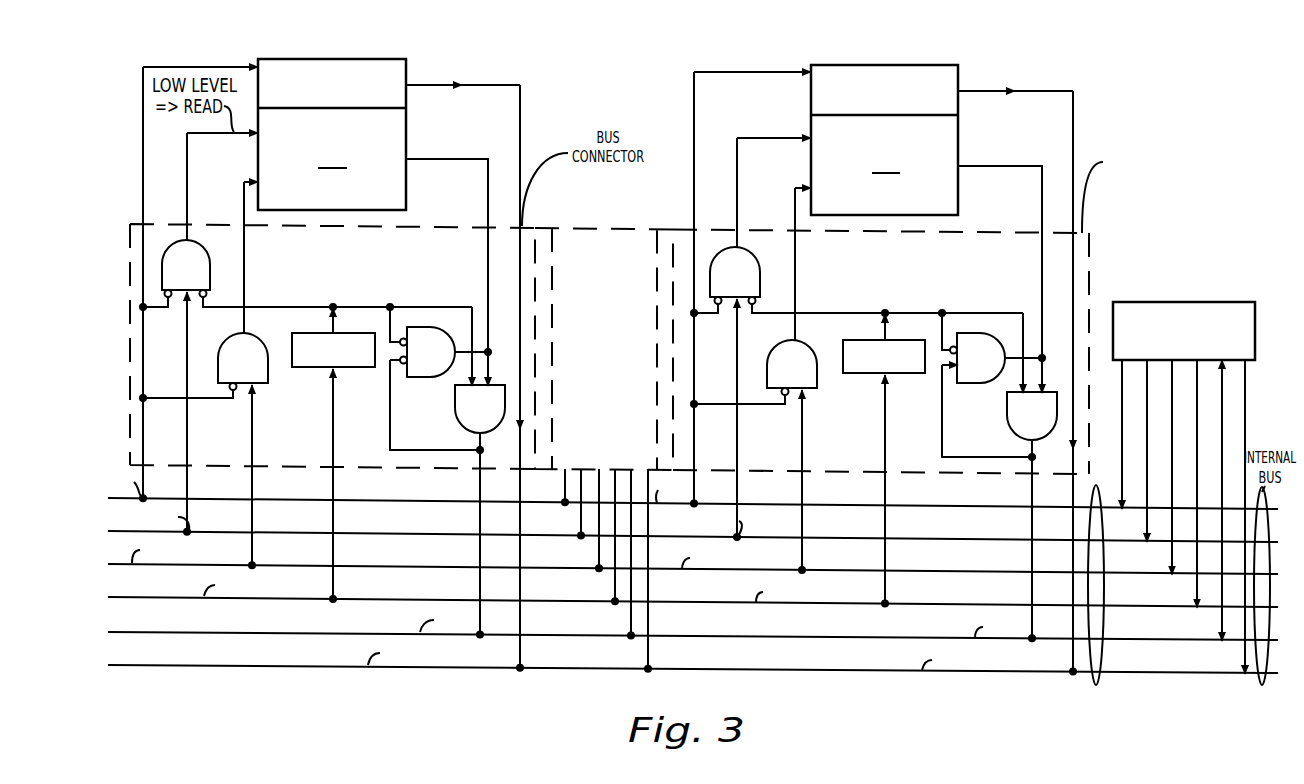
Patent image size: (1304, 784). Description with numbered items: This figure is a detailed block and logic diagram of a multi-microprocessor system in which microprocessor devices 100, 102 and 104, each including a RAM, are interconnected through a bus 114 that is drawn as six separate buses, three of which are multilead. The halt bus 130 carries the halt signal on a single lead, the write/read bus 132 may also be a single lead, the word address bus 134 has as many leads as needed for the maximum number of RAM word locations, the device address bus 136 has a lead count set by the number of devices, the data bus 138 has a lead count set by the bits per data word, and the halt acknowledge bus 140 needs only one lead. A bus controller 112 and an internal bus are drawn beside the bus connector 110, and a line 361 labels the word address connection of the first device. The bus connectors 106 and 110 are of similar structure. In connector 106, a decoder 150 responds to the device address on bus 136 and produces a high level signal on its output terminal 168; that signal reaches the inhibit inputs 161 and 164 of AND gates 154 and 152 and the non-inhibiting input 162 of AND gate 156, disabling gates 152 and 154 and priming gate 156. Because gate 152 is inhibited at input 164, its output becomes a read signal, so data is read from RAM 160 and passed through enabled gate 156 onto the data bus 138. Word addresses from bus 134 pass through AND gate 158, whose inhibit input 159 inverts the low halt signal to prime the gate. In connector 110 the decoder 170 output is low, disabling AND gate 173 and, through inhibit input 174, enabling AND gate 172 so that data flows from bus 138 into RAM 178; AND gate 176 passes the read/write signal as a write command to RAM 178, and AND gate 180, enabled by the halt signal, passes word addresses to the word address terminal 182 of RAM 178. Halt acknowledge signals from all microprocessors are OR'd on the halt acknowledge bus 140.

The microprocessor device 100 is at (328, 59).
The microprocessor device 102 is at (598, 226).
The microprocessor device 104 is at (893, 65).
The bus connector 106 is at (132, 224).
The bus connector 110 is at (1090, 250).
The bus controller 112 is at (1185, 302).
The bus 114 is at (1096, 487).
The halt bus 130 is at (935, 505).
The write/read bus 132 is at (935, 539).
The word address bus 134 is at (935, 572).
The device address bus 136 is at (943, 605).
The data bus 138 is at (907, 638).
The halt acknowledge bus 140 is at (855, 671).
The decoder 150 is at (297, 369).
The AND gate 152 is at (211, 274).
The AND gate 154 is at (446, 327).
The AND gate 156 is at (457, 428).
The AND gate 158 is at (218, 363).
The inhibit input 159 is at (237, 400).
The RAM 160 is at (406, 142).
The inhibit input 161 is at (398, 305).
The non-inhibiting input 162 is at (458, 377).
The inhibit input 164 is at (207, 299).
The output terminal 168 is at (336, 320).
The decoder 170 is at (845, 375).
The AND gate 172 is at (993, 333).
The AND gate 173 is at (1007, 420).
The inhibit input 174 is at (950, 347).
The AND gate 176 is at (722, 247).
The RAM 178 is at (961, 139).
The AND gate 180 is at (767, 365).
The word address terminal 182 is at (810, 186).
The word address line 361 is at (258, 180).